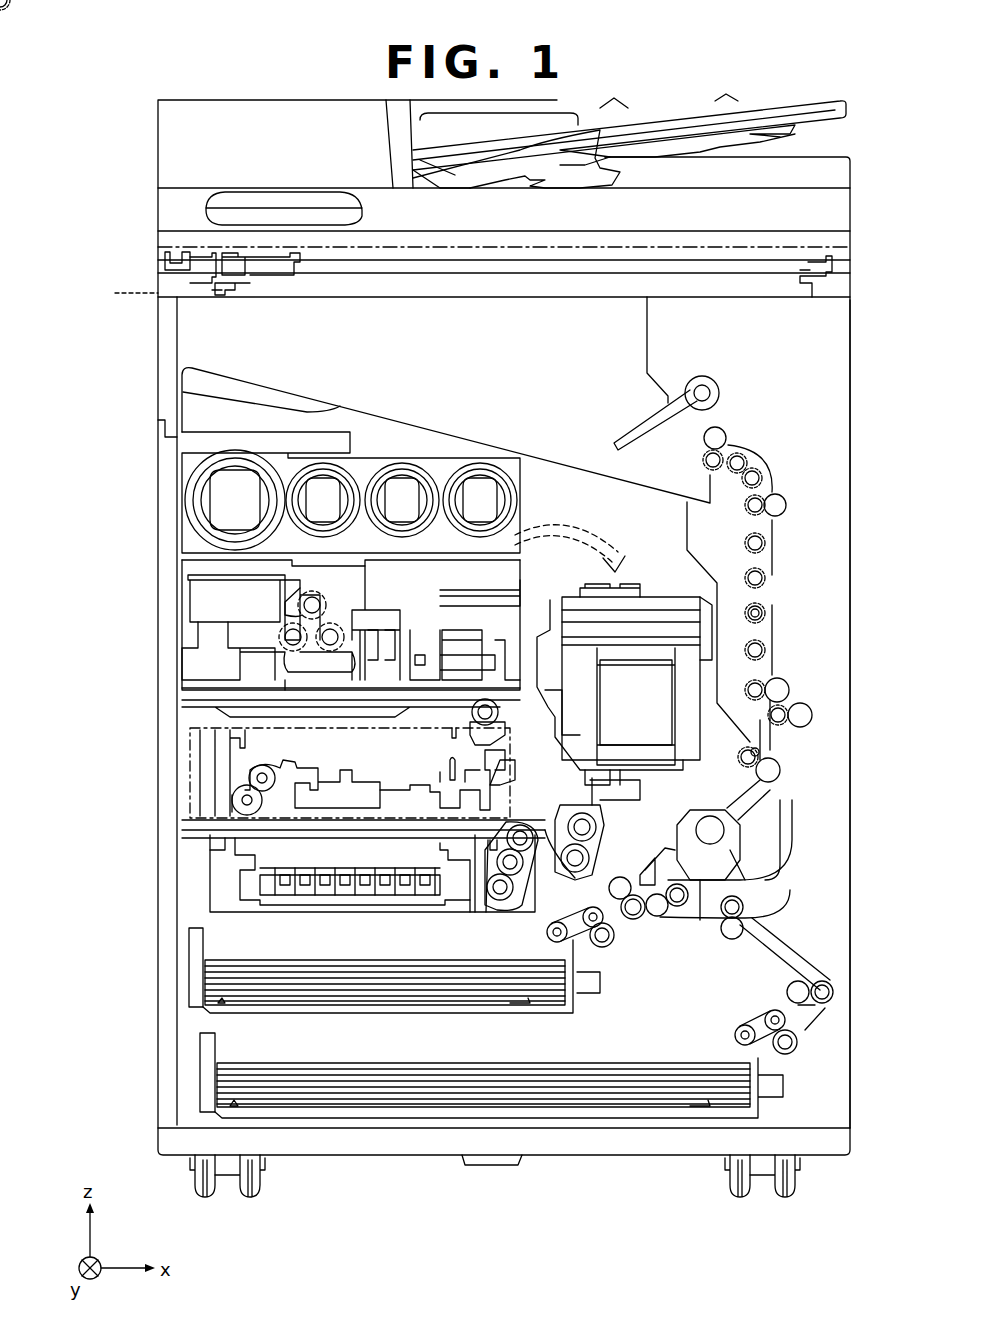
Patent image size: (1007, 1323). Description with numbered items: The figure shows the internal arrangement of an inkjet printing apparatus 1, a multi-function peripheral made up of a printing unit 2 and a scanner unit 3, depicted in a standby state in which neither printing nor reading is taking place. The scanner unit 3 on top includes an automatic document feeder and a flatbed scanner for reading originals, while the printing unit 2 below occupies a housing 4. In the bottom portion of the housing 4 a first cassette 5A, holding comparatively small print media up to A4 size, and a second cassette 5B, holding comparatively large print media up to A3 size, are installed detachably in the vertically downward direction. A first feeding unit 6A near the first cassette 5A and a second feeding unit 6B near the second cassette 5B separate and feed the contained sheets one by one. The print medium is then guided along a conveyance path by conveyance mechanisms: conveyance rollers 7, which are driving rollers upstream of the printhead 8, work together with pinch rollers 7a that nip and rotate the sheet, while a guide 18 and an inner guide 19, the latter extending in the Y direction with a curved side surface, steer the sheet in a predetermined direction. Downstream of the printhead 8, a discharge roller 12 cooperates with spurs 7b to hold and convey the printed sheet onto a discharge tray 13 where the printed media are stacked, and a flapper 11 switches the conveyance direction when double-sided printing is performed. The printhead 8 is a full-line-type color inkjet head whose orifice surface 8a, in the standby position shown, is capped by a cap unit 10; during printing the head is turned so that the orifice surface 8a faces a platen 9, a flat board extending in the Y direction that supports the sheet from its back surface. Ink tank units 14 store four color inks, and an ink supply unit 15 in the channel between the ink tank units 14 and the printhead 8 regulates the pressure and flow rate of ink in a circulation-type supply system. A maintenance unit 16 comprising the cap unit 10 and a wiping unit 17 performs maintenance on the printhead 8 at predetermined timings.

The inkjet printing apparatus 1 is at (806, 68).
The printing unit 2 is at (108, 300).
The scanner unit 3 is at (108, 98).
The housing 4 is at (852, 378).
The first cassette 5A is at (195, 972).
The second cassette 5B is at (205, 1081).
The first feeding unit 6A is at (606, 948).
The second feeding unit 6B is at (798, 1045).
The conveyance rollers 7 is at (785, 785).
The pinch rollers 7a is at (725, 925).
The spurs 7b is at (762, 615).
The printhead 8 is at (660, 700).
The orifice surface 8a is at (602, 790).
The platen 9 is at (728, 818).
The cap unit 10 is at (745, 832).
The flapper 11 is at (785, 668).
The discharge roller 12 is at (722, 432).
The discharge tray 13 is at (443, 432).
The ink tank units 14 is at (190, 466).
The ink supply unit 15 is at (190, 634).
The maintenance unit 16 is at (205, 868).
The wiping unit 17 is at (205, 745).
The guide 18 is at (777, 540).
The inner guide 19 is at (755, 878).